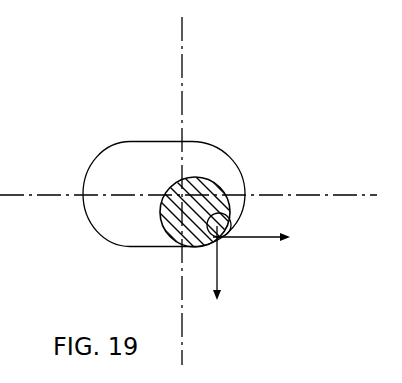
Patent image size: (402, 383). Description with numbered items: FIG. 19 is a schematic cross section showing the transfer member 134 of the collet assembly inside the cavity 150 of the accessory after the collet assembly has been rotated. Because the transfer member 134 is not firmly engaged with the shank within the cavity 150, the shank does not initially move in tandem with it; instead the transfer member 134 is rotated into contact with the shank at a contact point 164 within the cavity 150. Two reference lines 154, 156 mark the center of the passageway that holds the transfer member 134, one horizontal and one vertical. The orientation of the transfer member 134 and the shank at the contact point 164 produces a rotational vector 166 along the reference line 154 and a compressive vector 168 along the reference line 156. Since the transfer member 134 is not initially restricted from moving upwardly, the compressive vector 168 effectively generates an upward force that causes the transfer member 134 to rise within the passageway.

The transfer member 134 is at (221, 185).
The cavity 150 is at (166, 249).
The reference line 154 is at (335, 195).
The reference line 156 is at (182, 32).
The contact point 164 is at (224, 216).
The rotational vector 166 is at (260, 238).
The compressive vector 168 is at (221, 268).